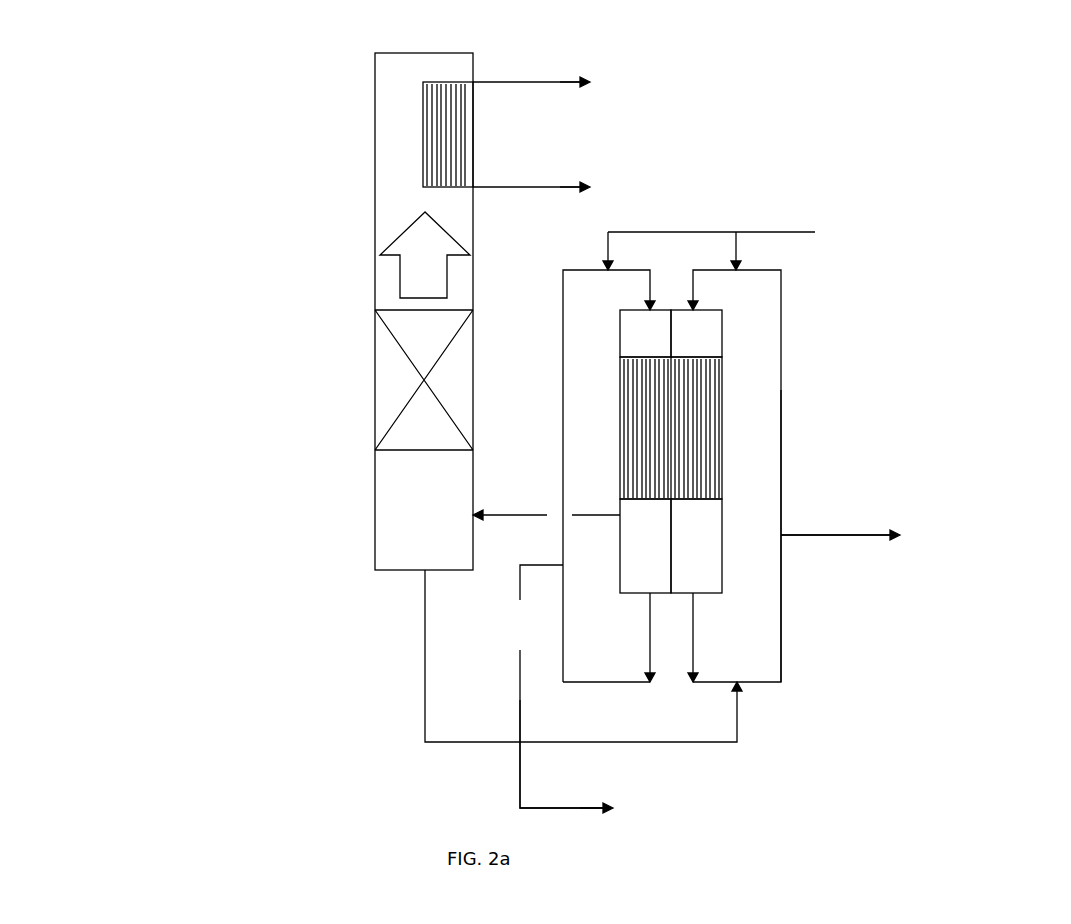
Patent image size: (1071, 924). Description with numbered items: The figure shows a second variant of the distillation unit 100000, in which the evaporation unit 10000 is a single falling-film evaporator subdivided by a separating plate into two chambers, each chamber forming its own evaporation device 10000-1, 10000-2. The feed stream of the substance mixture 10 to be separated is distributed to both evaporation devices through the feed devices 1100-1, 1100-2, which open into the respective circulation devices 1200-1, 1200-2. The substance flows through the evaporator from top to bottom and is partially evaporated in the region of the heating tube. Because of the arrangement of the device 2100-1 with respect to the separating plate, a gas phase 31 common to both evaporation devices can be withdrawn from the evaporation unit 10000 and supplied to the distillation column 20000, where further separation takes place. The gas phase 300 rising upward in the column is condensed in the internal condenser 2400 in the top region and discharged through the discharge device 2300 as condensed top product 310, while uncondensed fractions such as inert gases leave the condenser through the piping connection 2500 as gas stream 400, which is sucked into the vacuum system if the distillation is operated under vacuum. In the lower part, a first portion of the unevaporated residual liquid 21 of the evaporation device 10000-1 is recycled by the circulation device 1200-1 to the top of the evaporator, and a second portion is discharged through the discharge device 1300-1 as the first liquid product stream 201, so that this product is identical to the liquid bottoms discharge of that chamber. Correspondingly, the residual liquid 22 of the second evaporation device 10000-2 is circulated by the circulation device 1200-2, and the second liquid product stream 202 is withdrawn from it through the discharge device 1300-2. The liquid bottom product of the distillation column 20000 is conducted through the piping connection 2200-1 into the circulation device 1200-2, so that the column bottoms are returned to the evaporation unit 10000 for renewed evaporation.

The system 100000 is at (196, 212).
The distillation column 20000 is at (348, 94).
The gas phase 300 is at (425, 255).
The internal condenser 2400 is at (448, 125).
The piping connection 2500 is at (604, 57).
The gas stream 400 is at (597, 85).
The discharge device 2300 is at (498, 185).
The condensed top product 310 is at (597, 188).
The evaporation unit 10000 is at (727, 200).
The feed stream of the substance mixture 10 is at (727, 229).
The inlet line 1100-2 is at (606, 246).
The feed device 1100-1 is at (740, 250).
The circulation device 1200-2 is at (562, 377).
The circulation device 1200-1 is at (781, 396).
The gaseous stream 31 is at (647, 444).
The outlet compartment 22 is at (645, 590).
The unevaporated residual liquid 21 is at (696, 590).
The device 2100-1 is at (518, 510).
The evaporation device 10000-1 is at (792, 496).
The first liquid product stream 201 is at (861, 536).
The discharge device 1300-1 is at (847, 536).
The evaporation device 10000-2 is at (632, 548).
The outlet line 1300-2 is at (518, 762).
The liquid product stream 202 is at (619, 810).
The piping connection 2200-1 is at (423, 648).